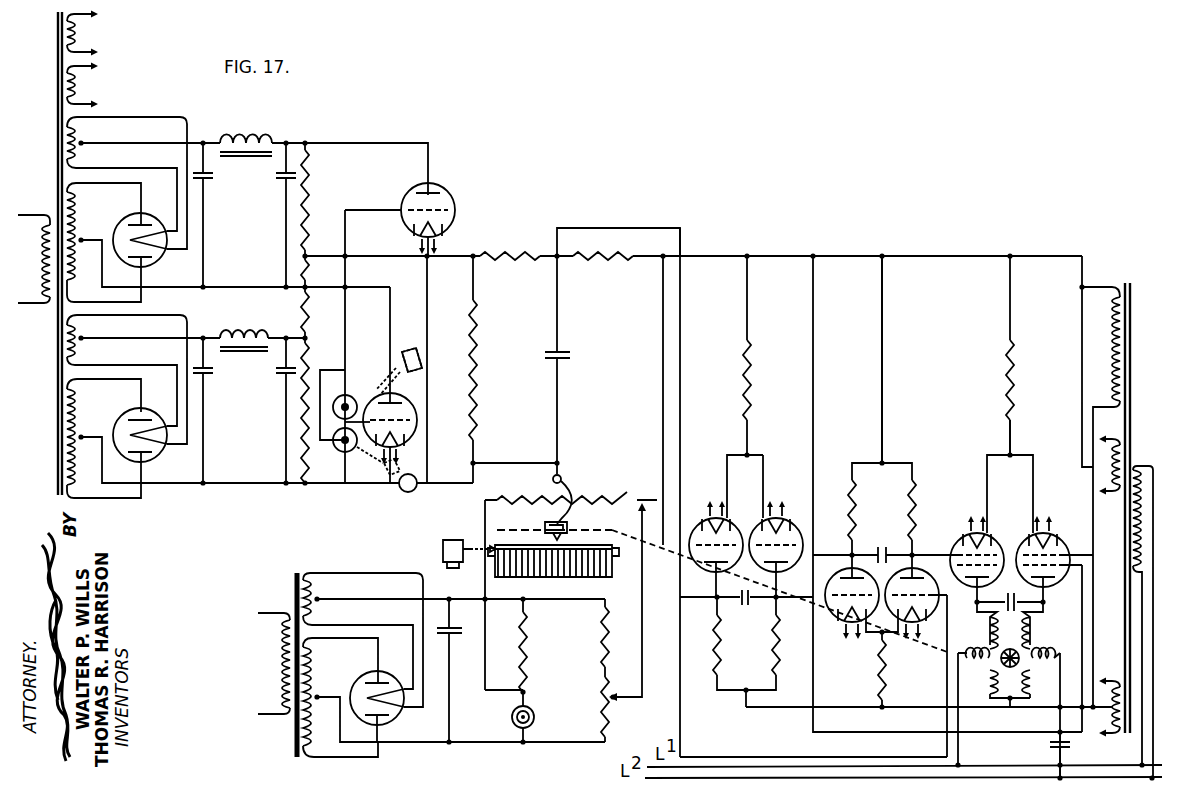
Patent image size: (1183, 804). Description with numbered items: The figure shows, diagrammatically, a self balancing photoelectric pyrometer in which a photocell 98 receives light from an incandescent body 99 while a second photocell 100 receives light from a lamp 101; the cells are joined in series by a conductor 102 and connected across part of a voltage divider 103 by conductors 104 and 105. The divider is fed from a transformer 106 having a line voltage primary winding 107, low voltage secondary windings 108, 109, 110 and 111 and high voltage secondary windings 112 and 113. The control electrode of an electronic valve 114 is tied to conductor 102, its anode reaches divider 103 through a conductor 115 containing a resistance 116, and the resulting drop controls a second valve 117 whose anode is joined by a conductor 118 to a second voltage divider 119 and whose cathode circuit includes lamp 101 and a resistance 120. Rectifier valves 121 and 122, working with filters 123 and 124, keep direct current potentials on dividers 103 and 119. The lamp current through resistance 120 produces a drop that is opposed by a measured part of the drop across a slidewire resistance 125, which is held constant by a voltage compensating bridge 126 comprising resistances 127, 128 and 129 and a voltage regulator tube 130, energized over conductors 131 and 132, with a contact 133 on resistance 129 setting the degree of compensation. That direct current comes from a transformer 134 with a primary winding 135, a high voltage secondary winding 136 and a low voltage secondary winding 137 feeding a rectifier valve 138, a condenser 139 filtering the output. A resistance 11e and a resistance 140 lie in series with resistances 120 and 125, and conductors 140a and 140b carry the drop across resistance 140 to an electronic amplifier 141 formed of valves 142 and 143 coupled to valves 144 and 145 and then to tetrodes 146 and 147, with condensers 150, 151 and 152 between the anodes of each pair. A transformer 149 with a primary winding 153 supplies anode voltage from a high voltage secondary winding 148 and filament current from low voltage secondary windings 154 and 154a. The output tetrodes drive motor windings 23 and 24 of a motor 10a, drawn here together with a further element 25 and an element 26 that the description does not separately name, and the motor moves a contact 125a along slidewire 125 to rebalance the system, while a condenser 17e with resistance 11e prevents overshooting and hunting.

The transformer 106 is at (58, 80).
The line voltage primary winding 107 is at (46, 262).
The low voltage secondary winding 108 is at (83, 40).
The low voltage secondary winding 109 is at (83, 90).
The low voltage secondary winding 110 is at (83, 325).
The low voltage secondary winding 111 is at (83, 131).
The high voltage secondary winding 112 is at (83, 400).
The high voltage secondary winding 113 is at (83, 199).
The electronic valve 114 is at (392, 453).
The conductor 115 is at (389, 317).
The resistance 116 is at (307, 297).
The electronic valve 117 is at (458, 186).
The conductor 118 is at (445, 162).
The voltage divider 119 is at (309, 179).
The resistance 120 is at (478, 320).
The electronic valve 121 is at (158, 459).
The electronic valve 122 is at (158, 263).
The filter 123 is at (254, 319).
The filter 124 is at (254, 124).
The slidewire resistance 125 is at (590, 478).
The contact 125a is at (552, 521).
The voltage compensating bridge 126 is at (579, 671).
The resistance 127 is at (525, 613).
The resistance 128 is at (601, 629).
The resistance 129 is at (600, 724).
The voltage regulator tube 130 is at (530, 710).
The conductor 131 is at (490, 742).
The conductor 132 is at (465, 600).
The contact 133 is at (619, 701).
The transformer 134 is at (292, 590).
The primary winding 135 is at (276, 659).
The high voltage secondary winding 136 is at (312, 662).
The low voltage secondary winding 137 is at (312, 592).
The rectifier valve 138 is at (397, 718).
The condenser 139 is at (456, 634).
The resistance 140 is at (614, 262).
The conductor 140a is at (647, 225).
The conductor 140b is at (703, 254).
The electronic amplifier 141 is at (908, 226).
The electronic valve 142 is at (706, 518).
The electronic valve 143 is at (792, 518).
The electronic valve 144 is at (846, 629).
The electronic valve 145 is at (921, 629).
The electronic valve 146 is at (956, 540).
The electronic valve 147 is at (1068, 535).
The high voltage secondary winding 148 is at (1100, 314).
The transformer 149 is at (1123, 278).
The condenser 150 is at (745, 608).
The condenser 151 is at (882, 544).
The condenser 152 is at (1011, 592).
The line voltage primary winding 153 is at (1136, 505).
The low voltage secondary winding 154 is at (1100, 484).
The low voltage secondary winding 154a is at (1106, 735).
The condenser 17e is at (572, 356).
The resistance 11e is at (495, 256).
The photocell 98 is at (381, 389).
The incandescent body 99 is at (405, 352).
The photocell 100 is at (366, 451).
The lamp 101 is at (412, 488).
The conductor 102 is at (344, 422).
The voltage divider 103 is at (311, 350).
The conductor 104 is at (340, 368).
The conductor 105 is at (330, 486).
The motor winding 23 is at (990, 688).
The motor winding 24 is at (1027, 684).
The motor winding 25 is at (964, 652).
The capacitor 26 is at (1050, 745).
The motor 10a is at (1025, 649).